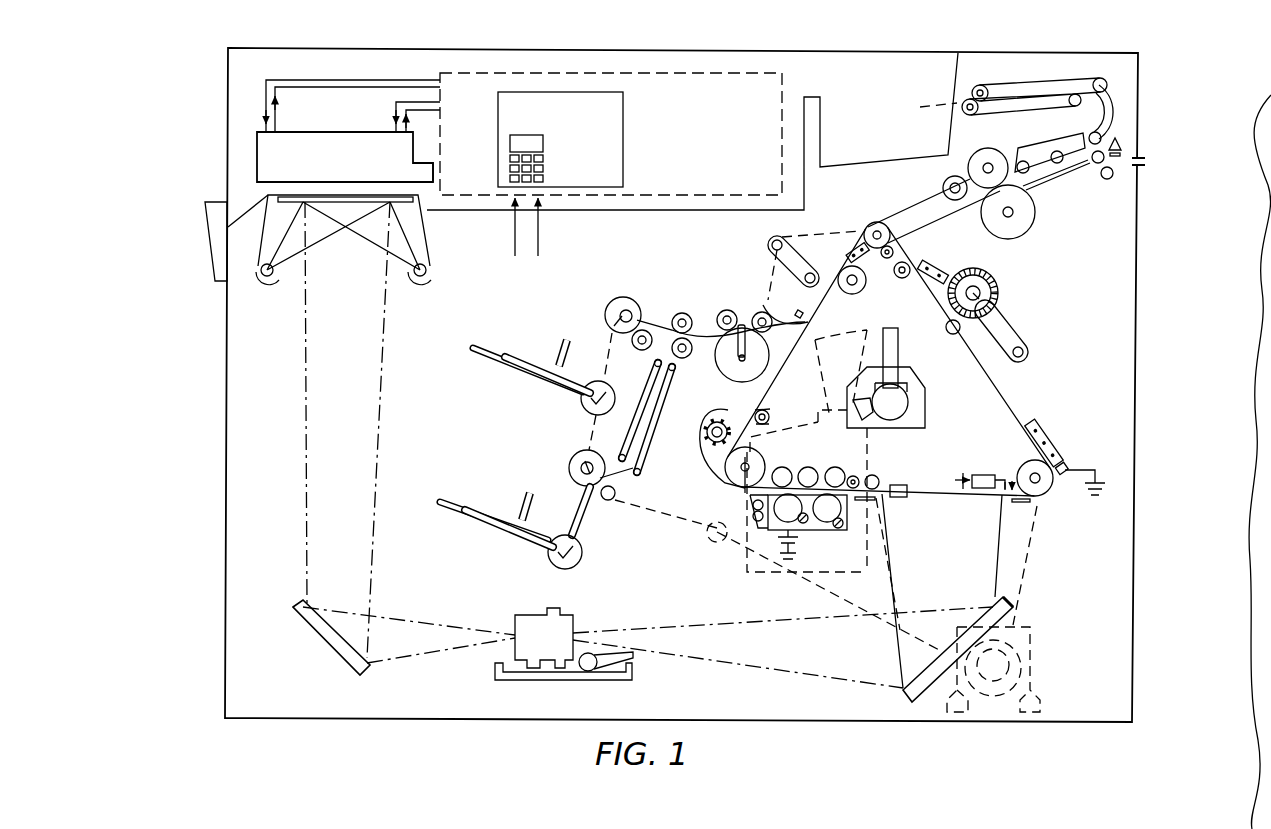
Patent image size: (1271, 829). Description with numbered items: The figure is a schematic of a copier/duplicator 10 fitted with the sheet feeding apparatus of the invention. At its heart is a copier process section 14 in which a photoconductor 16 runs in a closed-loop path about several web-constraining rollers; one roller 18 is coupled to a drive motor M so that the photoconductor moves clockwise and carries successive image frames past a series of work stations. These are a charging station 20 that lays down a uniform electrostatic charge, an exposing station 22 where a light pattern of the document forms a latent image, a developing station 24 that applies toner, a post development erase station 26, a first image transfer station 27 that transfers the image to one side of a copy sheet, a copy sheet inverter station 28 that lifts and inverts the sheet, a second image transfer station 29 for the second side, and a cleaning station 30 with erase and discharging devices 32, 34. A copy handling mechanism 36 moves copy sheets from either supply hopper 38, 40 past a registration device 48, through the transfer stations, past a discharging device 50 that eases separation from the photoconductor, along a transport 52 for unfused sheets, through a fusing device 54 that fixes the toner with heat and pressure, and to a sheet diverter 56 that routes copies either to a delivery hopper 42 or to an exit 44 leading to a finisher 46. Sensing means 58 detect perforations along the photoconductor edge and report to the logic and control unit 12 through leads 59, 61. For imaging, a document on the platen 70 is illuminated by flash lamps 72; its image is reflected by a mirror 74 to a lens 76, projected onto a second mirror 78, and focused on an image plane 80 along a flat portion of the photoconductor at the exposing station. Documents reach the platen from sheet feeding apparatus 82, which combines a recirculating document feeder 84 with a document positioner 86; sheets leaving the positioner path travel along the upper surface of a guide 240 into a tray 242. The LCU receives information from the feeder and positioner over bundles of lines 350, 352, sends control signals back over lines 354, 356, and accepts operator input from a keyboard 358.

The copier/duplicator 10 is at (1055, 47).
The logic and control unit (LCU) 12 is at (790, 87).
The copier process section 14 is at (1030, 387).
The photoconductor 16 is at (993, 503).
The roller 18 is at (1050, 498).
The charging station 20 is at (1054, 441).
The exposing station 22 is at (936, 486).
The developing station 24 is at (825, 528).
The post development erase station 26 is at (777, 395).
The first image transfer station 27 is at (767, 307).
The copy sheet inverter station 28 is at (769, 248).
The second image transfer station 29 is at (845, 251).
The cleaning station 30 is at (1019, 329).
The erase device 32 is at (900, 281).
The discharging device 34 is at (948, 271).
The copy handling mechanism 36 is at (589, 424).
The supply hopper 38 is at (495, 365).
The supply hopper 40 is at (485, 520).
The delivery hopper 42 is at (900, 74).
The exit 44 is at (1148, 160).
The finisher 46 is at (1247, 334).
The registration device 48 is at (733, 349).
The discharging device 50 is at (855, 242).
The transport 52 is at (915, 218).
The fusing device 54 is at (1022, 213).
The sheet diverter 56 is at (1130, 141).
The sensing means 58 is at (983, 477).
The lead 59 is at (540, 231).
The lead 61 is at (512, 232).
The platen 70 is at (322, 196).
The flash lamps 72 is at (267, 284).
The mirror 74 is at (332, 643).
The lens 76 is at (525, 682).
The second mirror 78 is at (903, 695).
The image plane 80 is at (925, 498).
The sheet feeding apparatus 82 is at (256, 152).
The recirculating document feeder 84 is at (328, 142).
The document positioner 86 is at (437, 176).
The guide 240 is at (243, 212).
The tray 242 is at (211, 252).
The bundle of lines 350 is at (268, 97).
The bundle of lines 352 is at (434, 108).
The bundle of lines 354 is at (262, 112).
The bundle of lines 356 is at (407, 100).
The keyboard 358 is at (549, 156).
The drive motor M is at (1025, 667).